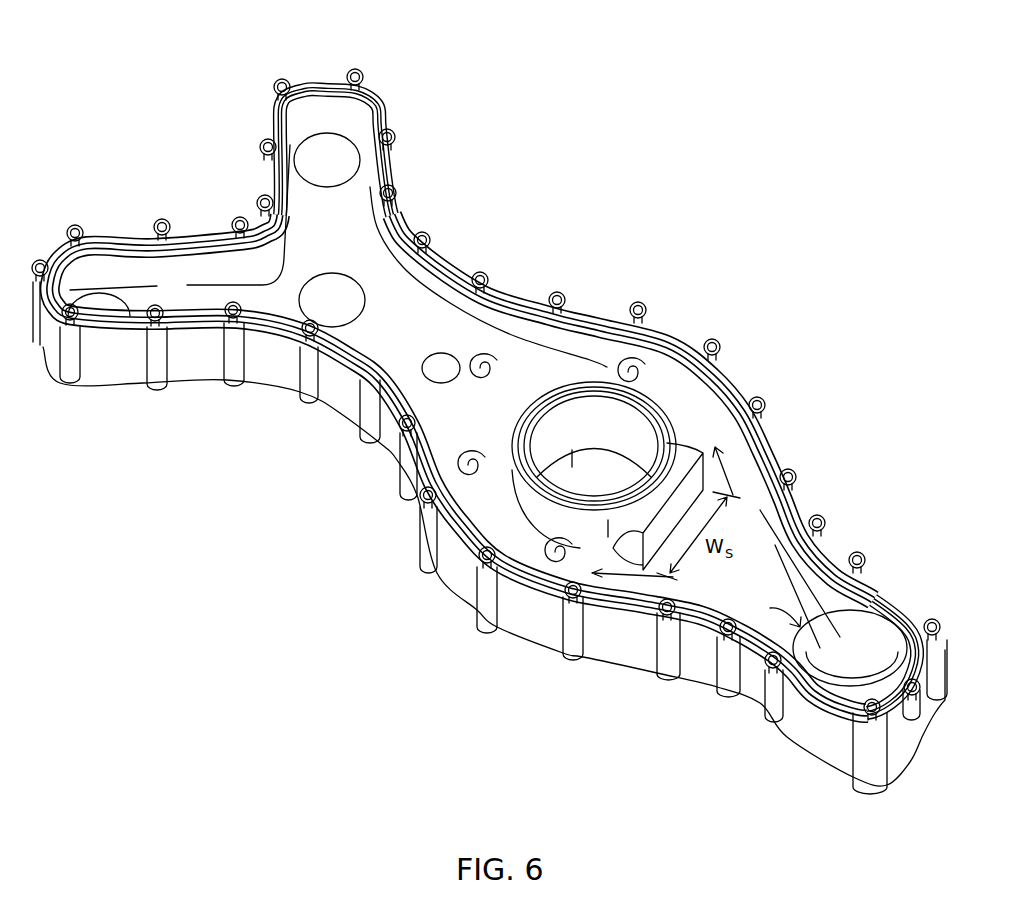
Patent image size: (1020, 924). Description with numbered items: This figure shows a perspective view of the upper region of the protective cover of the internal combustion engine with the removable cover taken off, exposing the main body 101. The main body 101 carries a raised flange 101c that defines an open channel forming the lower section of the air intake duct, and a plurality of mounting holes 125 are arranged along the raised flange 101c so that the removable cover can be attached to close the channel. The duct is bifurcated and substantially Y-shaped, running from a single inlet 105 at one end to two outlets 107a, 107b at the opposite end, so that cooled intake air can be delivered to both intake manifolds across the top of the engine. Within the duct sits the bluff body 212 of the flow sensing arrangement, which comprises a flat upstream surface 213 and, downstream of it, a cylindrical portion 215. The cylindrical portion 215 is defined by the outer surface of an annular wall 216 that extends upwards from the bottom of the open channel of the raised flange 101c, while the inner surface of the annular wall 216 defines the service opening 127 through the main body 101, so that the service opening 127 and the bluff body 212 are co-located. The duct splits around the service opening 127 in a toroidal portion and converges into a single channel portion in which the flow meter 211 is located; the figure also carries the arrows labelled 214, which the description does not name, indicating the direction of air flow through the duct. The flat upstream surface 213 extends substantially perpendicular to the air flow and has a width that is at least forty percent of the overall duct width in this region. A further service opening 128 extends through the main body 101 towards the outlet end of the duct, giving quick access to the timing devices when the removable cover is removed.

The main body 101 is at (683, 337).
The raised flange 101c is at (683, 337).
The inlet 105 is at (777, 690).
The outlet 107a is at (330, 133).
The outlet 107b is at (98, 300).
The mounting holes 125 is at (715, 342).
The service opening 127 is at (572, 470).
The further service opening 128 is at (328, 273).
The flow meter 211 is at (440, 353).
The bluff body 212 is at (600, 395).
The flat upstream surface 213 is at (667, 517).
The flow direction 214 is at (703, 477).
The cylindrical portion 215 is at (667, 430).
The annular wall 216 is at (667, 430).